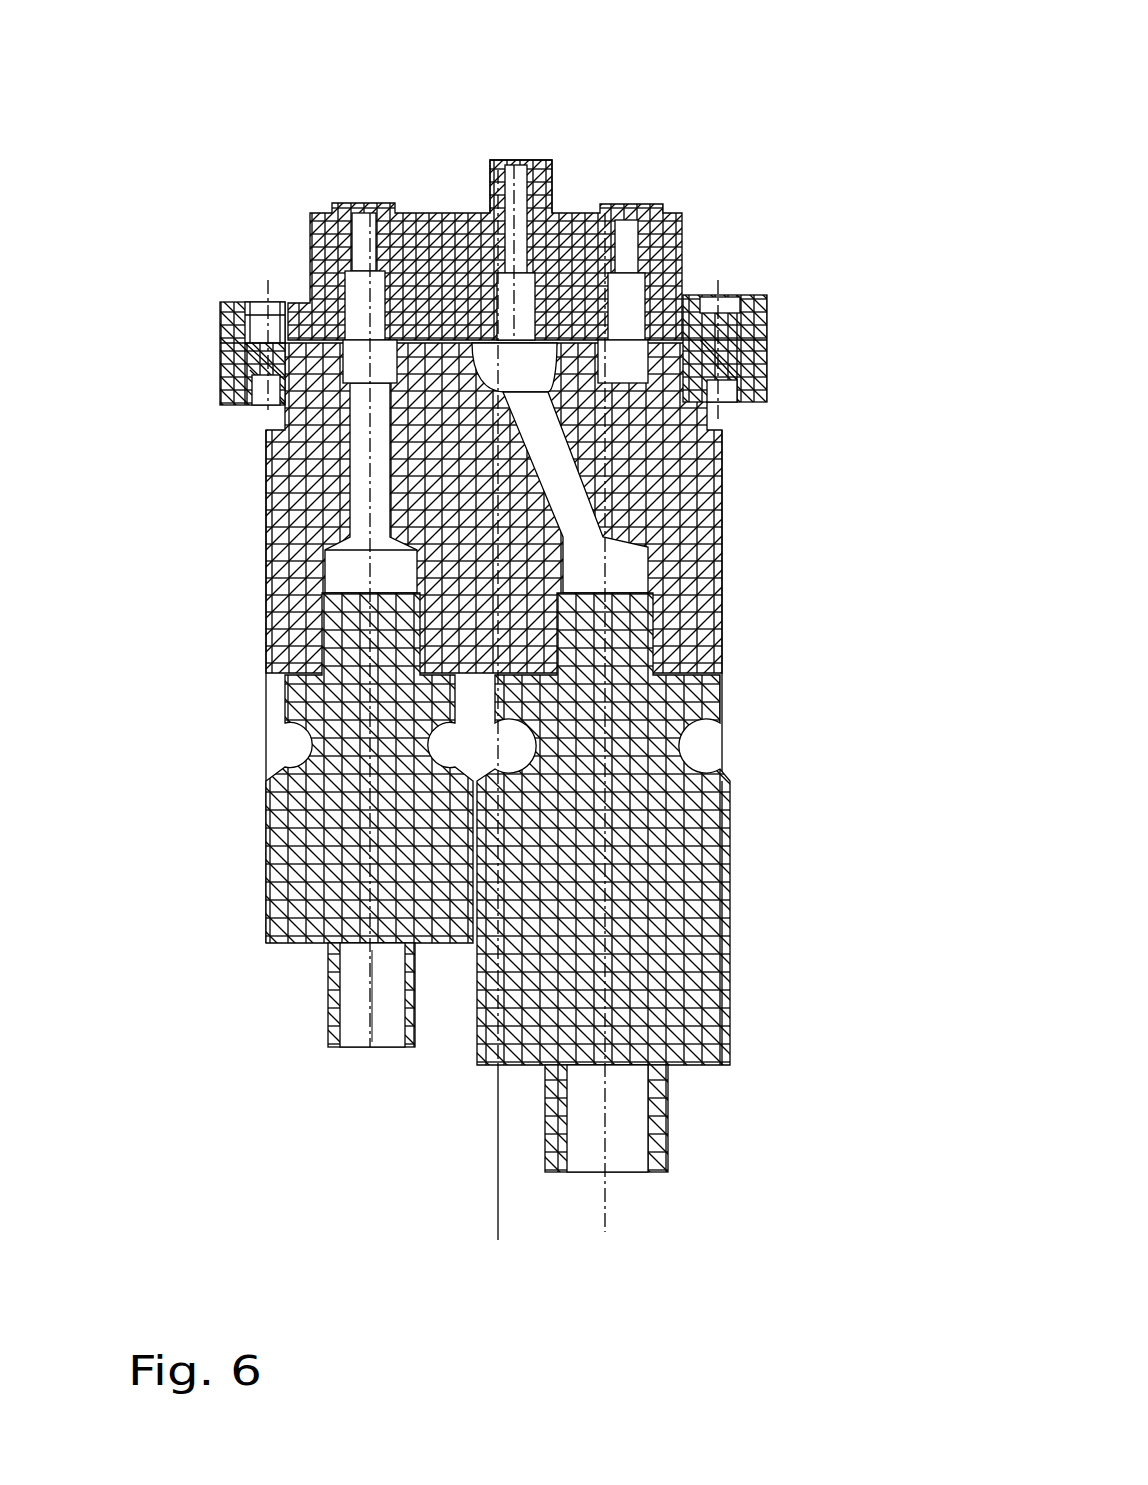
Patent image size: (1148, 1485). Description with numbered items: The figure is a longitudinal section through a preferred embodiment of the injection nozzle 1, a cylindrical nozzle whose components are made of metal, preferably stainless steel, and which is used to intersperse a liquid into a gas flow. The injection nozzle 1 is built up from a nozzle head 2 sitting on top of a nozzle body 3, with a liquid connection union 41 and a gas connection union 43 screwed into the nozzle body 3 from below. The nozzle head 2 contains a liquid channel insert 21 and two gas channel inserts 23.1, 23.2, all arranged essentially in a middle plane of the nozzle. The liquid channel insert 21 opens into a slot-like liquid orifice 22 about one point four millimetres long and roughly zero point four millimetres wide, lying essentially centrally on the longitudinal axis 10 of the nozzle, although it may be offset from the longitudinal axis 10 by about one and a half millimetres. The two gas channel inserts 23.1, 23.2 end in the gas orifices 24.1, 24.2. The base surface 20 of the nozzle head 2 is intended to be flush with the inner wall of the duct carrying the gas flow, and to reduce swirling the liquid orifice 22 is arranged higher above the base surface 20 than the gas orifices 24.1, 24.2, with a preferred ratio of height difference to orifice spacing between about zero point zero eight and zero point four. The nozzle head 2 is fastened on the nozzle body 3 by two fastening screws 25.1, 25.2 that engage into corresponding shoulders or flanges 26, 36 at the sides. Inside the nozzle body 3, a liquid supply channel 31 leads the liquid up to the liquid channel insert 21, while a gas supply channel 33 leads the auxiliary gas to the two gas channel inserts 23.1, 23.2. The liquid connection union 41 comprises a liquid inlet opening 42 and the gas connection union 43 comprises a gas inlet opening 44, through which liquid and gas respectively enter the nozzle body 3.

The injection nozzle 1 is at (171, 102).
The nozzle head 2 is at (495, 244).
The nozzle body 3 is at (753, 484).
The longitudinal axis 10 is at (497, 1185).
The base surface 20 is at (570, 211).
The liquid channel insert 21 is at (490, 184).
The liquid orifice 22 is at (514, 170).
The gas channel insert 23.1 is at (333, 242).
The gas channel insert 23.2 is at (655, 237).
The gas orifice 24.1 is at (357, 203).
The gas orifice 24.2 is at (627, 204).
The fastening screw 25.1 is at (209, 367).
The fastening screw 25.2 is at (730, 362).
The shoulder or flange 26 is at (220, 322).
The liquid supply channel 31 is at (547, 437).
The gas supply channel 33 is at (353, 463).
The shoulder or flange 36 is at (220, 373).
The liquid connection union 41 is at (750, 806).
The liquid inlet opening 42 is at (625, 1130).
The gas connection union 43 is at (238, 807).
The gas inlet opening 44 is at (347, 1003).